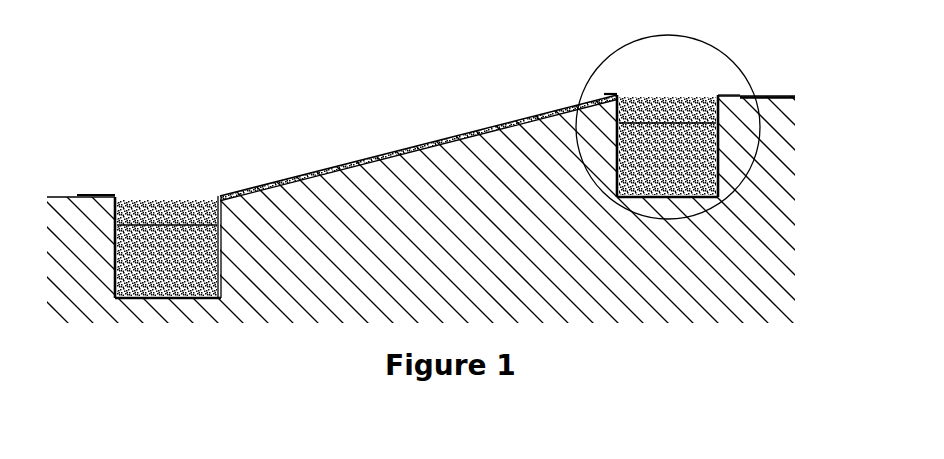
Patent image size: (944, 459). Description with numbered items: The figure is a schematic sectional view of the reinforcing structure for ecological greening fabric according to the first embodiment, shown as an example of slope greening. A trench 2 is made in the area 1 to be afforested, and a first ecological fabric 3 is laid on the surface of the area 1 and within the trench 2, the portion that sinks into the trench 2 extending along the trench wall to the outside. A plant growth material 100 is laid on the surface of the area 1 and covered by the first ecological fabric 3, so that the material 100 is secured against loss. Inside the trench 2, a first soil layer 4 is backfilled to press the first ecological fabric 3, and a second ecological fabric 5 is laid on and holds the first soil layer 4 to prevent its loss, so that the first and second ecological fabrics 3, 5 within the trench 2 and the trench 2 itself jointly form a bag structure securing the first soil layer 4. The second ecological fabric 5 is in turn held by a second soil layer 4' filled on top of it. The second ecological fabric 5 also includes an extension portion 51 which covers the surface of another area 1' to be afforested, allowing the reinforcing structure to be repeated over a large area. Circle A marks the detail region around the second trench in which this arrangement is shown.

The area to be afforested 1 is at (418, 139).
The another area to be afforested 1' is at (738, 146).
The trench 2 is at (220, 214).
The first ecological fabric 3 is at (58, 194).
The first soil layer 4 is at (167, 221).
The second soil layer 4' is at (167, 169).
The second ecological fabric 5 is at (101, 193).
The extension portion 51 is at (773, 96).
The plant growth material 100 is at (398, 142).
The detail region A is at (713, 55).